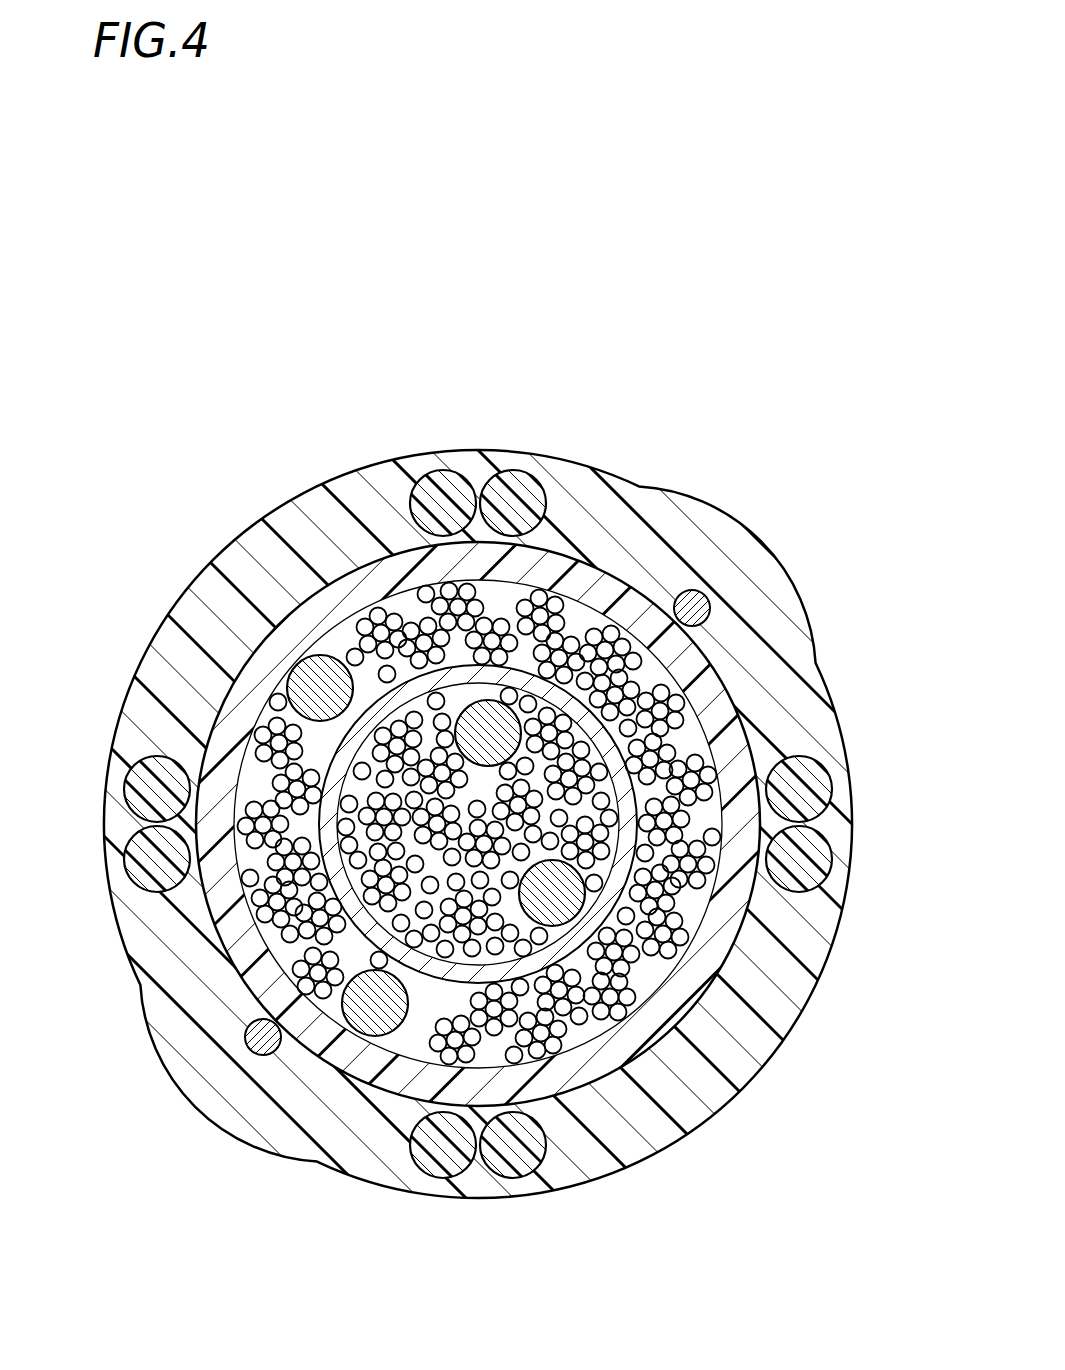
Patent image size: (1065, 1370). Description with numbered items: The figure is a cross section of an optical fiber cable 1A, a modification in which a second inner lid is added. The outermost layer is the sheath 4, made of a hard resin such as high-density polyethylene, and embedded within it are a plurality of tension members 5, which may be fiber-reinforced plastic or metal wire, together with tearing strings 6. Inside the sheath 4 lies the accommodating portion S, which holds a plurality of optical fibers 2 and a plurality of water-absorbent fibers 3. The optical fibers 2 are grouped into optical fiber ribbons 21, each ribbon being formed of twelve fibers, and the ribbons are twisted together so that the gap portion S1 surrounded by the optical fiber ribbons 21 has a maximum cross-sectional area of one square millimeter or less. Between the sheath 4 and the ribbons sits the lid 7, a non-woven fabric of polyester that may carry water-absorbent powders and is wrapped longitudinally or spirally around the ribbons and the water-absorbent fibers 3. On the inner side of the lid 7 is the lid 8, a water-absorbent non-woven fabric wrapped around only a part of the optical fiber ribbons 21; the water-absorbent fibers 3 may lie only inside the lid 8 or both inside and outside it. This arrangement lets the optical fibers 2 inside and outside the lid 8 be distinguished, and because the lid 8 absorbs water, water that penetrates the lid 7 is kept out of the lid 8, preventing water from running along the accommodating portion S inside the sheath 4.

The optical fiber cable 1A is at (733, 374).
The optical fiber 2 is at (580, 617).
The optical fiber ribbon 21 is at (392, 608).
The water-absorbent fiber 3 is at (592, 915).
The sheath 4 is at (808, 700).
The tension member 5 is at (438, 490).
The tearing string 6 is at (694, 600).
The lid 7 is at (708, 685).
The lid 8 is at (247, 858).
The accommodating portion S is at (305, 500).
The gap portion S1 is at (360, 812).